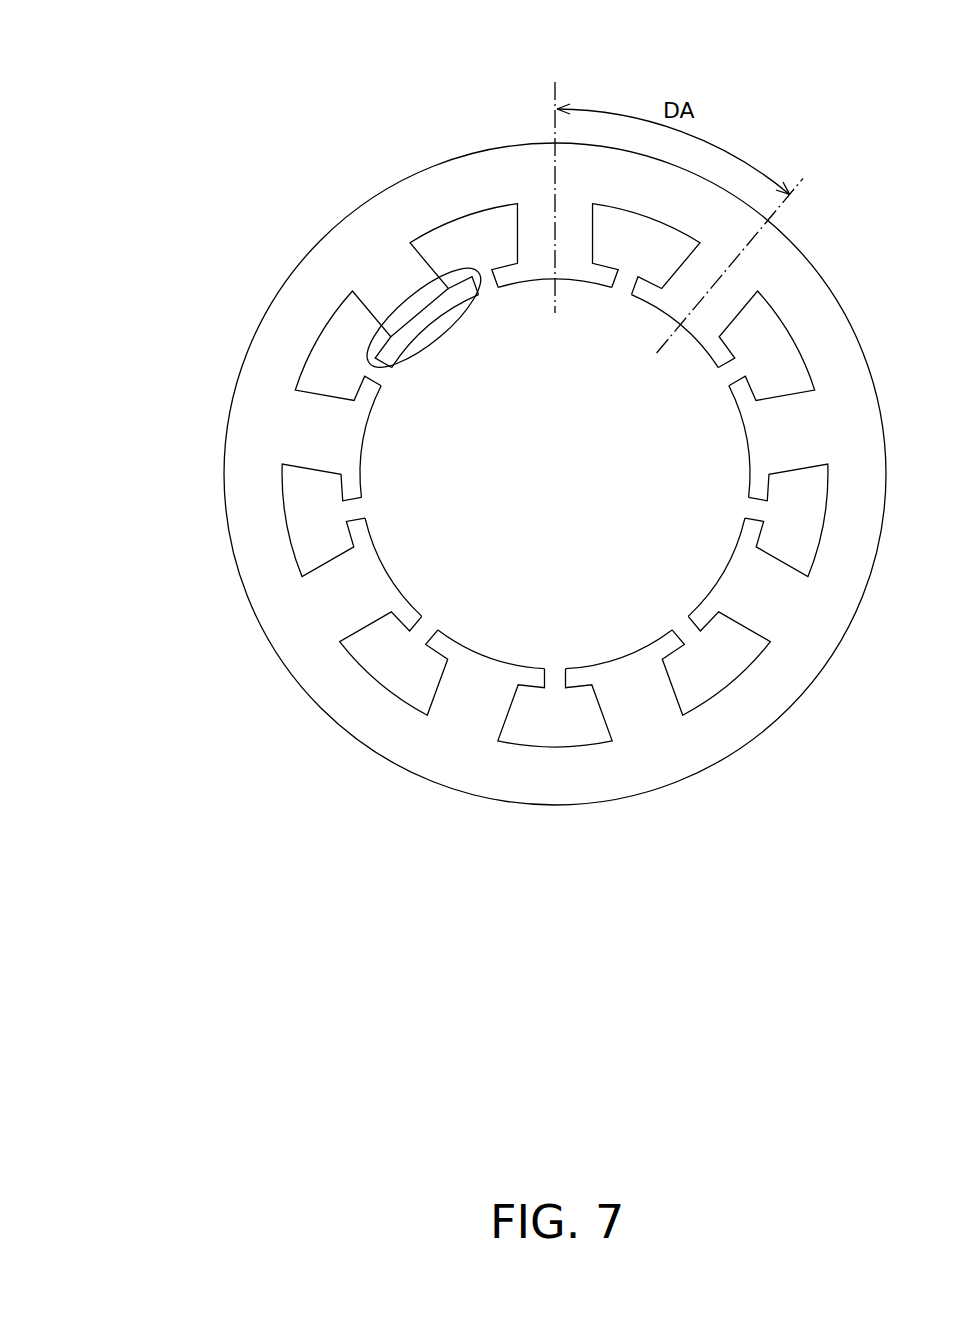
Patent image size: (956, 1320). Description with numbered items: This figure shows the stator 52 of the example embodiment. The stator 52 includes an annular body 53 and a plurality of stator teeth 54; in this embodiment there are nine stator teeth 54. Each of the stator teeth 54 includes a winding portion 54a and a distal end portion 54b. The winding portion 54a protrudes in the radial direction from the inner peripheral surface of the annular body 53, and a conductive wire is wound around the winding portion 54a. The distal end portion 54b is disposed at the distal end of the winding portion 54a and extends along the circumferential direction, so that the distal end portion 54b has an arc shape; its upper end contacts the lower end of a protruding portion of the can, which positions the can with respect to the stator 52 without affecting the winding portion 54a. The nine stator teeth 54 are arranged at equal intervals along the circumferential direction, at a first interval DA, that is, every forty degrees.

The stator 52 is at (544, 66).
The annular body 53 is at (560, 768).
The stator teeth 54 is at (345, 592).
The winding portion 54a is at (387, 277).
The distal end portion 54b is at (445, 340).